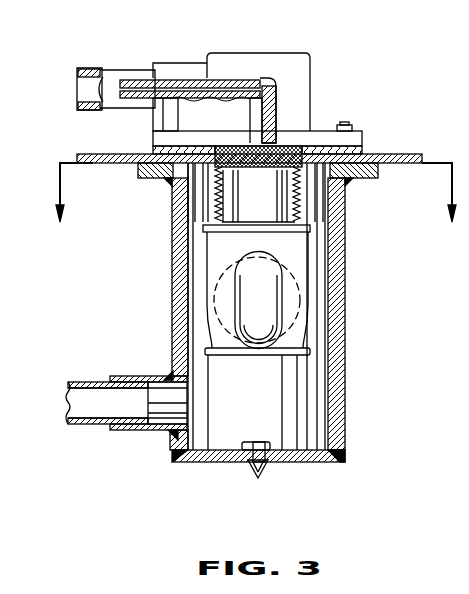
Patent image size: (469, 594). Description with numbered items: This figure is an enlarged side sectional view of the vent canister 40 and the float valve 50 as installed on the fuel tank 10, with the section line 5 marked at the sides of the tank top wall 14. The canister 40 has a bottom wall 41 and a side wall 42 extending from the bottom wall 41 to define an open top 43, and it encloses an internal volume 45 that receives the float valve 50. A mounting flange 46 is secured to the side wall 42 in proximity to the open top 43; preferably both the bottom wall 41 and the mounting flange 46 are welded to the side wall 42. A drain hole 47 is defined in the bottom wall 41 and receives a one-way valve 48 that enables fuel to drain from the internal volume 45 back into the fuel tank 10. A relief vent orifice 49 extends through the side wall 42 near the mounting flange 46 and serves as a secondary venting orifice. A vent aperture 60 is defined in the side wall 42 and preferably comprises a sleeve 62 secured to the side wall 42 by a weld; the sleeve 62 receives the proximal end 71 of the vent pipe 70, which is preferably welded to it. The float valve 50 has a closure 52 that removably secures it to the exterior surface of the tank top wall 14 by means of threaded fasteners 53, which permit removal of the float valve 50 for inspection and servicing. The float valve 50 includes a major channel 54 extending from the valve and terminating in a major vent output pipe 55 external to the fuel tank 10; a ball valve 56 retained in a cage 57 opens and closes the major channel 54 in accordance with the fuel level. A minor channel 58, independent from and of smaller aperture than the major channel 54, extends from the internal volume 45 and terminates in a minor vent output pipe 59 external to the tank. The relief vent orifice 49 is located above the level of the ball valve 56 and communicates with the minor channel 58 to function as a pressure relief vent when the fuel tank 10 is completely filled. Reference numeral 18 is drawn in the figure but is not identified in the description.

The section line 5- 5 is at (254, 207).
The fuel tank 10 is at (418, 168).
The tank top wall 14 is at (401, 153).
The seal collar 18 is at (188, 187).
The vent canister 40 is at (182, 310).
The bottom wall 41 is at (305, 460).
The side wall 42 is at (172, 248).
The open top 43 is at (163, 183).
The internal volume 45 is at (320, 414).
The mounting flange 46 is at (365, 178).
The drain hole 47 is at (247, 456).
The one-way valve 48 is at (262, 470).
The relief vent orifice 49 is at (333, 200).
The float valve 50 is at (311, 70).
The closure 52 is at (153, 140).
The threaded fasteners 53 is at (346, 124).
The major channel 54 is at (82, 90).
The major vent output pipe 55 is at (93, 71).
The ball valve 56 is at (300, 302).
The cage 57 is at (305, 343).
The minor channel 58 is at (186, 92).
The minor vent output pipe 59 is at (137, 80).
The vent aperture 60 is at (172, 440).
The sleeve 62 is at (136, 377).
The vent pipe 70 is at (73, 426).
The proximal end 71 is at (72, 381).